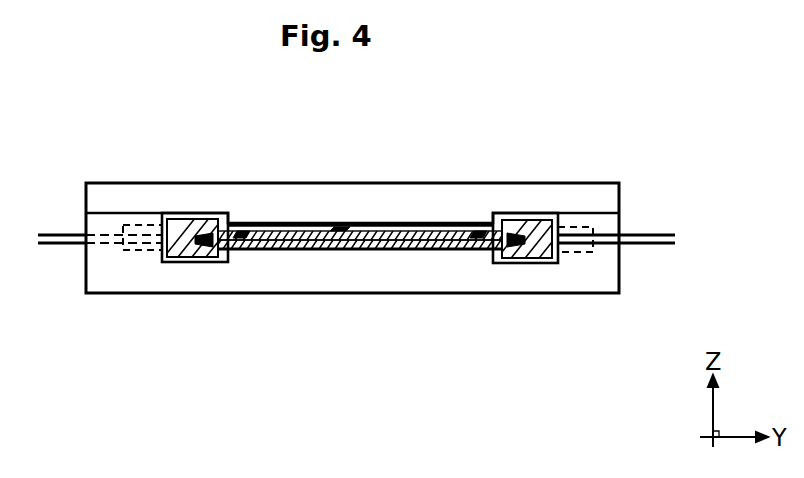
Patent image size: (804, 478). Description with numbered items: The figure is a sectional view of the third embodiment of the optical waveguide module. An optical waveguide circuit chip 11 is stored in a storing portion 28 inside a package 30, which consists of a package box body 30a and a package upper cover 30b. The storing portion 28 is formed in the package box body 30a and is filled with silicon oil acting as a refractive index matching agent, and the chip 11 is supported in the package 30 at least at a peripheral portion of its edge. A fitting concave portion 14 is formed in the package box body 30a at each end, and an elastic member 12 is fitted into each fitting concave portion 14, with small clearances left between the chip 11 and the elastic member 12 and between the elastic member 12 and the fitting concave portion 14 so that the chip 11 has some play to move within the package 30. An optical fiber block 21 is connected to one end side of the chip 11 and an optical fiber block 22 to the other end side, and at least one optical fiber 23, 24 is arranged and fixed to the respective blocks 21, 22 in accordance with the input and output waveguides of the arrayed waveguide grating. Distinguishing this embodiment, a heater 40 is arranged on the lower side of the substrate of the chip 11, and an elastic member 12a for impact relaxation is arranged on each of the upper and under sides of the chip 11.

The optical waveguide circuit chip 11 is at (463, 223).
The elastic member 12 is at (530, 259).
The elastic member 12a is at (339, 229).
The fitting concave portion 14 is at (160, 263).
The optical fiber block 21 is at (137, 226).
The optical fiber block 22 is at (593, 252).
The optical fiber 23 is at (52, 230).
The optical fiber 24 is at (660, 233).
The storing portion 28 is at (293, 251).
The package 30 is at (414, 217).
The package box body 30a is at (606, 280).
The package upper cover 30b is at (599, 196).
The heater 40 is at (388, 251).